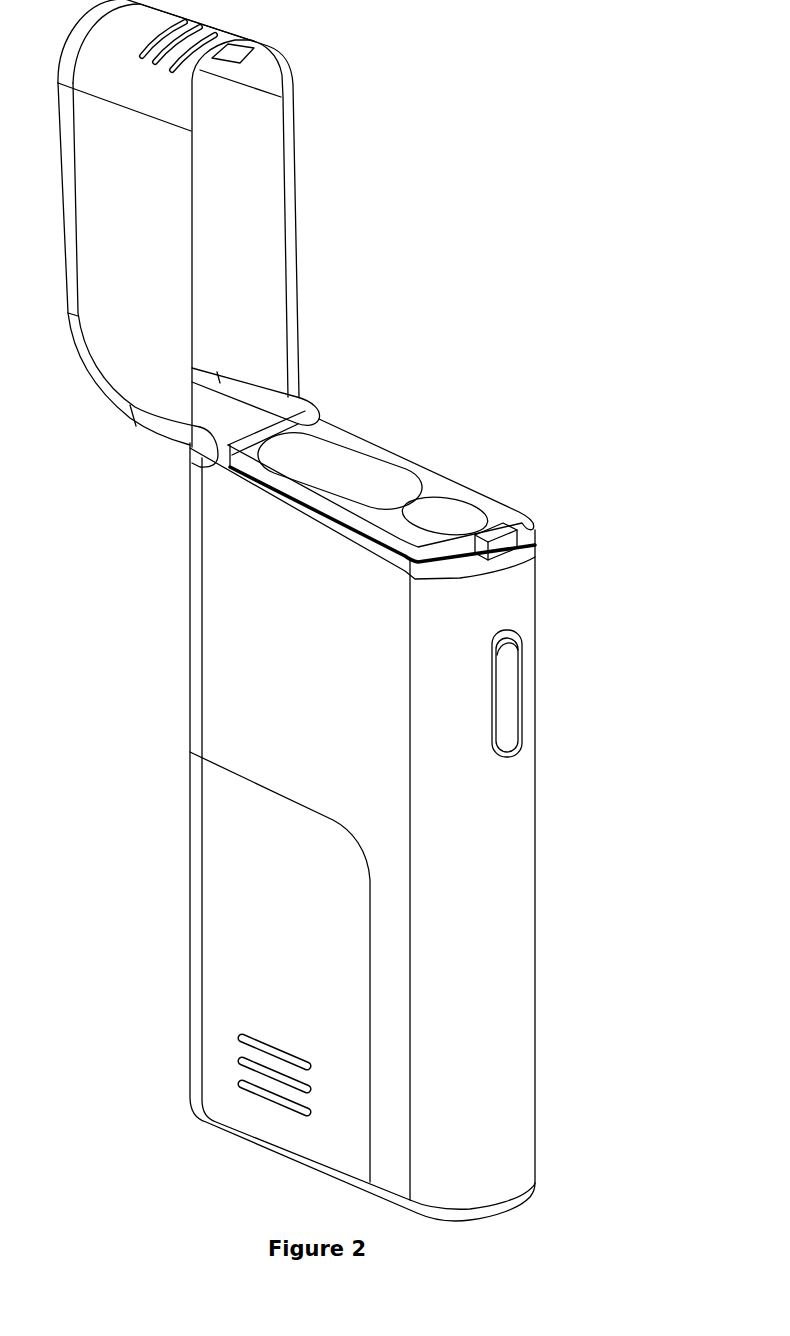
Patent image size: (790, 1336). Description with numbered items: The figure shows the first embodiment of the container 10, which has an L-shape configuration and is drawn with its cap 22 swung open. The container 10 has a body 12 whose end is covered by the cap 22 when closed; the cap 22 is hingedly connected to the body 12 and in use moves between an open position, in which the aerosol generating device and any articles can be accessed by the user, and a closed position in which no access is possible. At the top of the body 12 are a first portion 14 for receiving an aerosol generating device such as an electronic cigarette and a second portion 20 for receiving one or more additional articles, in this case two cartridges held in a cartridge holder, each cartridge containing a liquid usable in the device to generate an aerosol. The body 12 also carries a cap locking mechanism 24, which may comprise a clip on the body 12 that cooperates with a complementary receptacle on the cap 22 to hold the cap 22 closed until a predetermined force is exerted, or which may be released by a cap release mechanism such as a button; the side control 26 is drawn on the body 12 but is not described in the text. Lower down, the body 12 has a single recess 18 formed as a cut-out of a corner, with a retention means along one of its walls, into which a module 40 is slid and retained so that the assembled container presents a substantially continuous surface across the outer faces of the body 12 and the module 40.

The container 10 is at (596, 304).
The body 12 is at (535, 822).
The first portion 14 is at (463, 500).
The recess 18 is at (160, 821).
The second portion 20 is at (363, 453).
The cap 22 is at (297, 236).
The cap locking mechanism 24 is at (533, 530).
The side button 26 is at (518, 667).
The module 40 is at (208, 913).